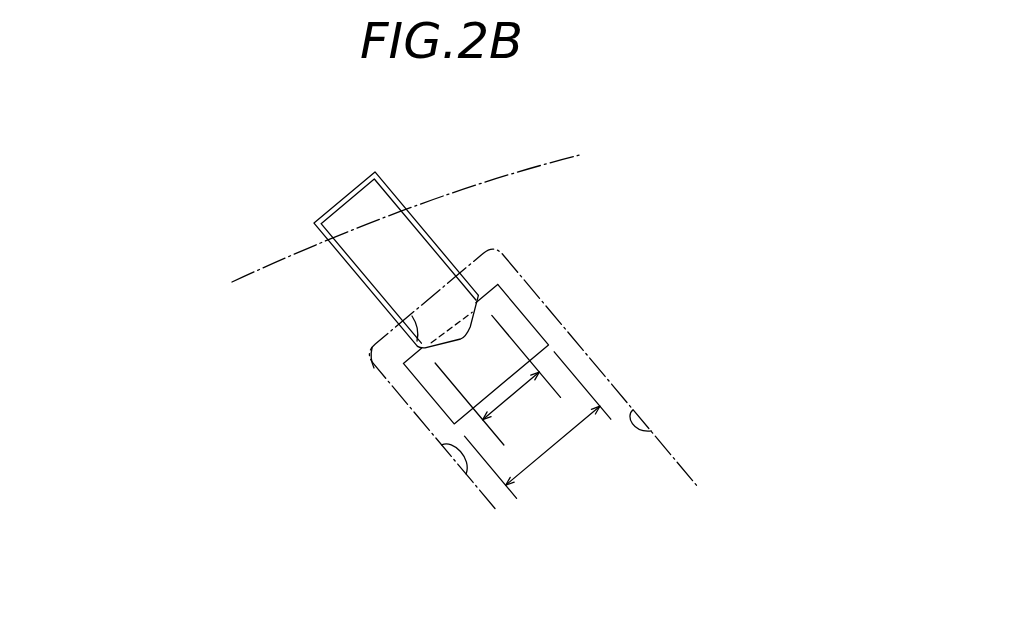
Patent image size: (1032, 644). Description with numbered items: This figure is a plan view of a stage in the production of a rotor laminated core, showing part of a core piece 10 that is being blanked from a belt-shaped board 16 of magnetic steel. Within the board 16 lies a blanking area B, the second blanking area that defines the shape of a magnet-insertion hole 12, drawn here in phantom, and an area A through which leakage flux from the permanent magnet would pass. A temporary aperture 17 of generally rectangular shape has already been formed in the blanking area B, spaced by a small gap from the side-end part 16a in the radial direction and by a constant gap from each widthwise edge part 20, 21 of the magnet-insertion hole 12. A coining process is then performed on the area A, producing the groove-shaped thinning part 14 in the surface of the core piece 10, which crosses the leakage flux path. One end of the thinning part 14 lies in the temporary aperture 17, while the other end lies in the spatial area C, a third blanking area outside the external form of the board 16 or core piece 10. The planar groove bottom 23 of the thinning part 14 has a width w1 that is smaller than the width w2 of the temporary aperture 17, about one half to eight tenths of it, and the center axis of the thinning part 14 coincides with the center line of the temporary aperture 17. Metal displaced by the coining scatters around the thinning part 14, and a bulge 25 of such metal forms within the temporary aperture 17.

The core piece 10 is at (491, 167).
The magnet-insertion hole 12 is at (677, 437).
The thinning part 14 is at (398, 238).
The belt-shaped board 16 is at (275, 248).
The side-end part 16a is at (415, 337).
The temporary aperture 17 is at (510, 315).
The edge part 20 is at (652, 430).
The edge part 21 is at (465, 474).
The groove bottom 23 is at (398, 283).
The bulge 25 is at (470, 338).
The area A is at (341, 268).
The blanking area B is at (415, 428).
The spatial area C is at (341, 196).
The width of the groove bottom w1 is at (497, 380).
The width of the temporary aperture w2 is at (538, 425).